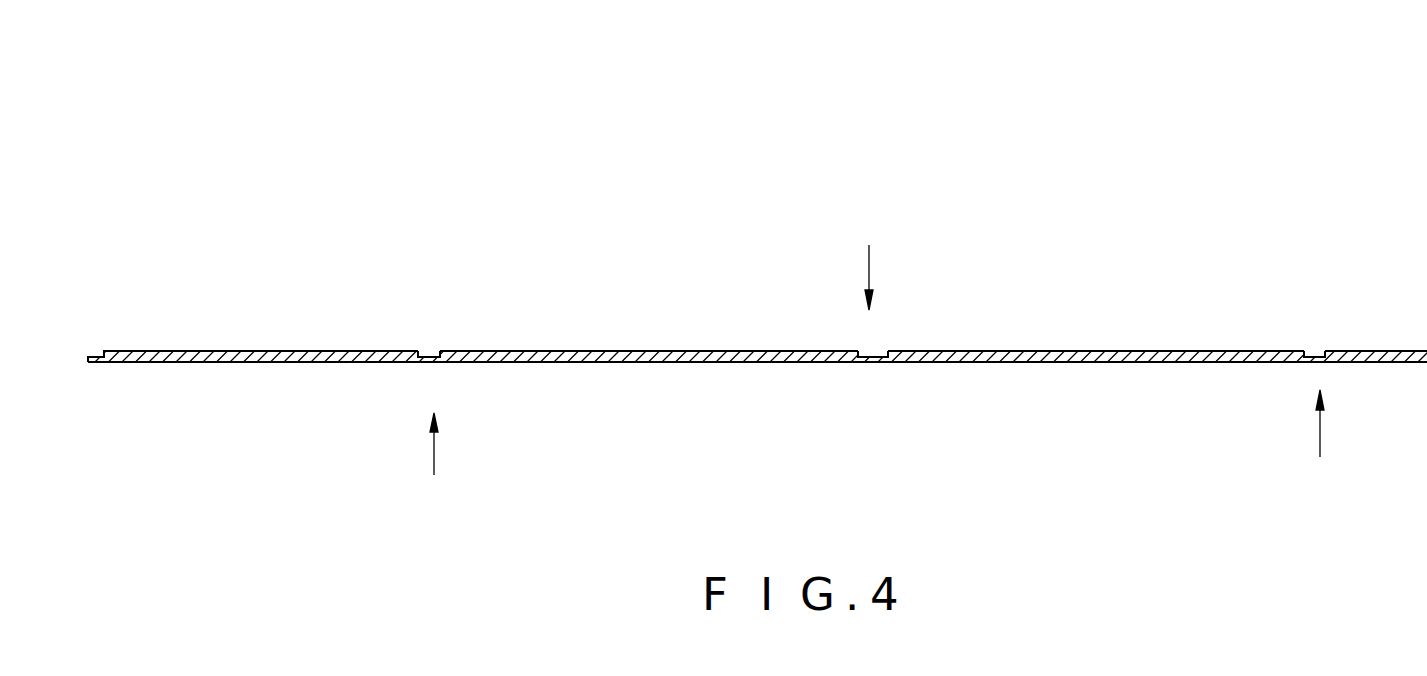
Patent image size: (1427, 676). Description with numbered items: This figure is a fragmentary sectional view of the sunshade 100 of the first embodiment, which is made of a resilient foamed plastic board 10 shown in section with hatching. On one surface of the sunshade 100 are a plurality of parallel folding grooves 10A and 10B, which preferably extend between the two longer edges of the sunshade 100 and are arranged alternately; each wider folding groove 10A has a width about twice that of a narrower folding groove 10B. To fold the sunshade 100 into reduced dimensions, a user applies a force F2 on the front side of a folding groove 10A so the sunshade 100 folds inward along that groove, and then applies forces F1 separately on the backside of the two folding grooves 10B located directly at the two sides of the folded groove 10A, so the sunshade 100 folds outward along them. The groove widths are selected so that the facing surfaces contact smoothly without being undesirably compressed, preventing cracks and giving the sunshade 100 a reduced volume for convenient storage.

The sunshade 100 is at (1048, 130).
The substrate plate 10 is at (582, 362).
The folding groove 10A is at (875, 355).
The folding groove 10B is at (428, 355).
The force F1 is at (878, 455).
The force F2 is at (868, 260).